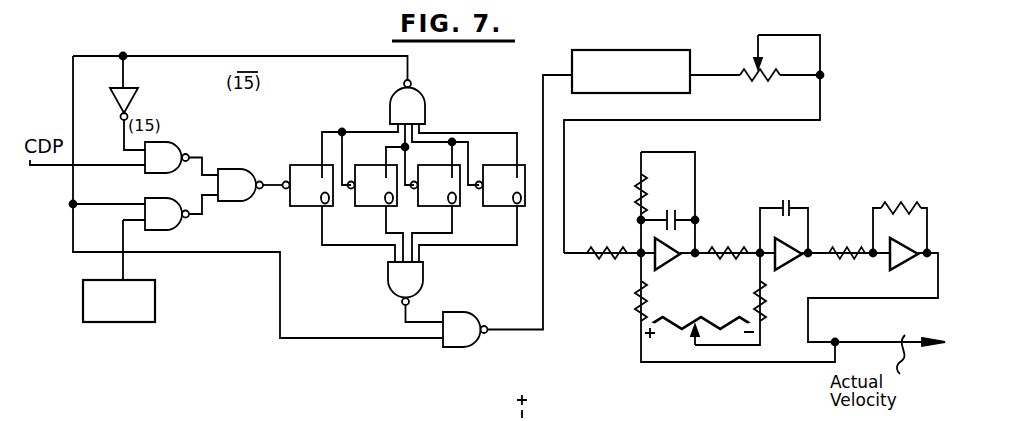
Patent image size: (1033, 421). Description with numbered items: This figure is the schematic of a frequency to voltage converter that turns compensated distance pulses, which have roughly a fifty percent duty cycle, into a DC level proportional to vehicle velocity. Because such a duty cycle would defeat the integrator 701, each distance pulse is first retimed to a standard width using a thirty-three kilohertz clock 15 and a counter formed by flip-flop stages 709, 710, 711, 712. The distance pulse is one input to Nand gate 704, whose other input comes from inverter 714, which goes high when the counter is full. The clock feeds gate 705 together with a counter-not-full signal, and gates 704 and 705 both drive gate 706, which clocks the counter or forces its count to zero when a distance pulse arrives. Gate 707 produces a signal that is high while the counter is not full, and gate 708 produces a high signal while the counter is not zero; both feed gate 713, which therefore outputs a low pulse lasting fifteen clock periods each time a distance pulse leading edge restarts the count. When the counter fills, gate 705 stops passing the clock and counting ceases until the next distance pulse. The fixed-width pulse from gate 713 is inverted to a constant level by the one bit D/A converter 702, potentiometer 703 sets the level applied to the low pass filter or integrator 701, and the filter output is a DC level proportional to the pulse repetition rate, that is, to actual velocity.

The integrator 701 is at (858, 197).
The converter 702 is at (681, 50).
The potentiometer 703 is at (757, 83).
The Nand gate 704 is at (181, 158).
The gate 705 is at (181, 212).
The gate 706 is at (250, 185).
The gate 707 is at (419, 132).
The gate 708 is at (419, 264).
The flip-flop stage 709 is at (308, 185).
The flip-flop stage 710 is at (373, 185).
The flip-flop stage 711 is at (436, 185).
The flip-flop stage 712 is at (501, 185).
The gate 713 is at (507, 211).
The inverter 714 is at (130, 97).
The 33 kilohertz clock 15 is at (155, 302).